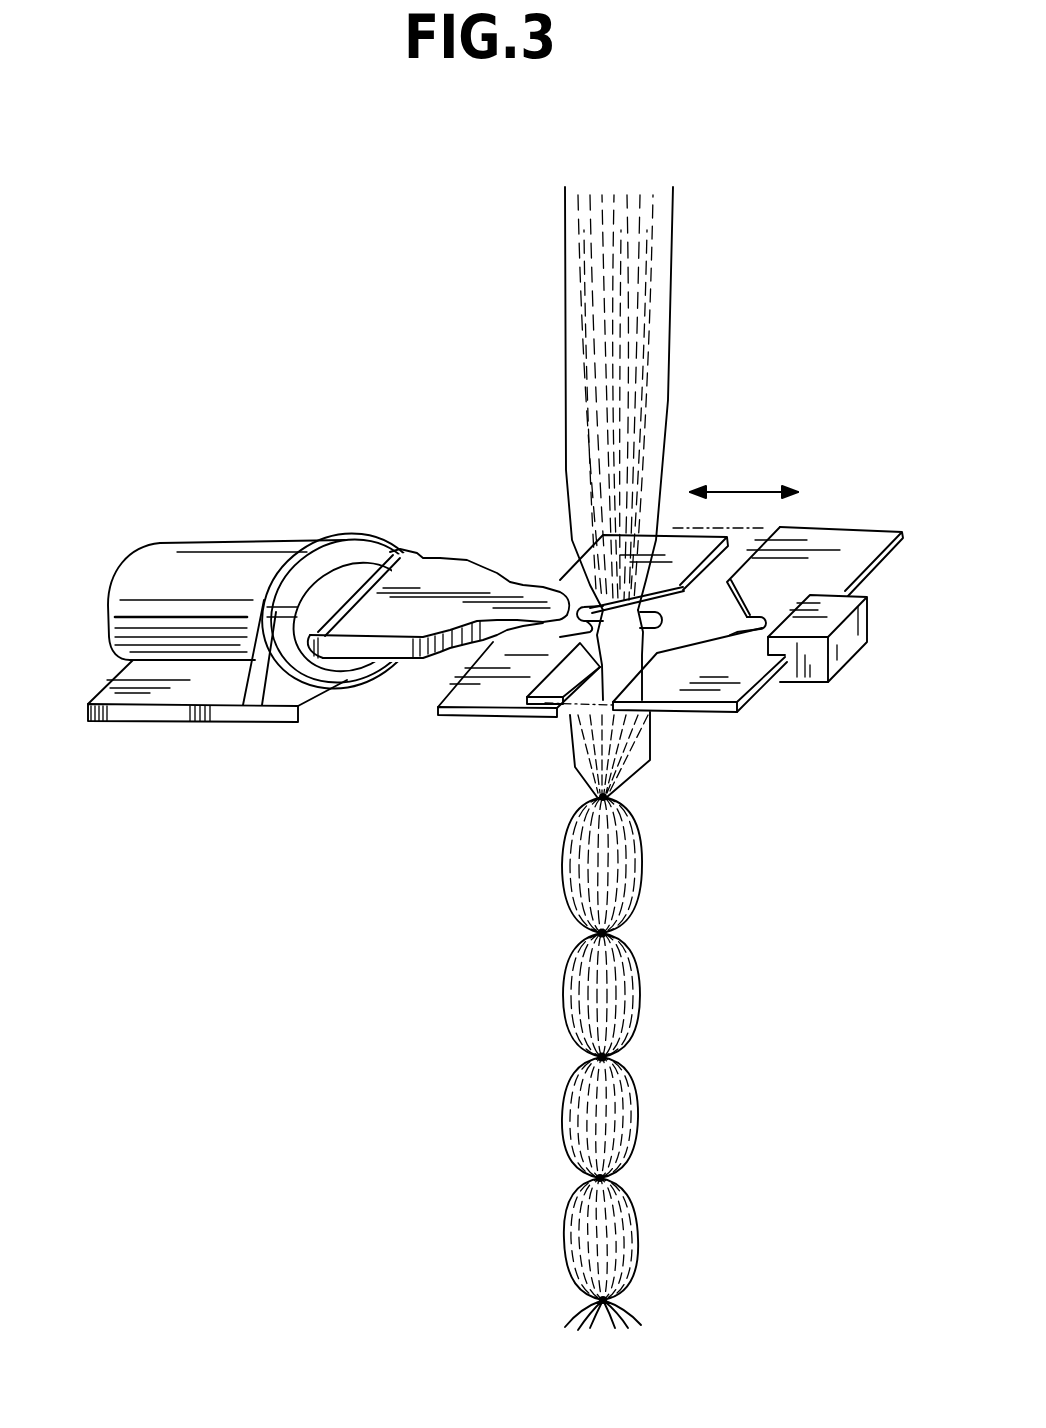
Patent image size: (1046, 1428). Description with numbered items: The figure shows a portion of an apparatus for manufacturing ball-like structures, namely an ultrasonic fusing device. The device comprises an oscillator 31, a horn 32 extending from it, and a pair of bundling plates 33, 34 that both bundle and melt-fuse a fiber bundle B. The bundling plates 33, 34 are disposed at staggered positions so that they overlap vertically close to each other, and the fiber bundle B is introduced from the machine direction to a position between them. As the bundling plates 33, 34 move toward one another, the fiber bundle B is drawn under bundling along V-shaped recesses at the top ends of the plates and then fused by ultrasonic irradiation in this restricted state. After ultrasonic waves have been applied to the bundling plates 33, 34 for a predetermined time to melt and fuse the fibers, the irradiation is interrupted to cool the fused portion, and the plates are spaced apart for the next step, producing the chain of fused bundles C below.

The oscillator 31 is at (217, 567).
The horn 32 is at (442, 578).
The bundling plate 33 is at (487, 687).
The bundling plate 34 is at (850, 550).
The fiber bundle B is at (655, 275).
The tied fiber bundle chain C is at (627, 795).